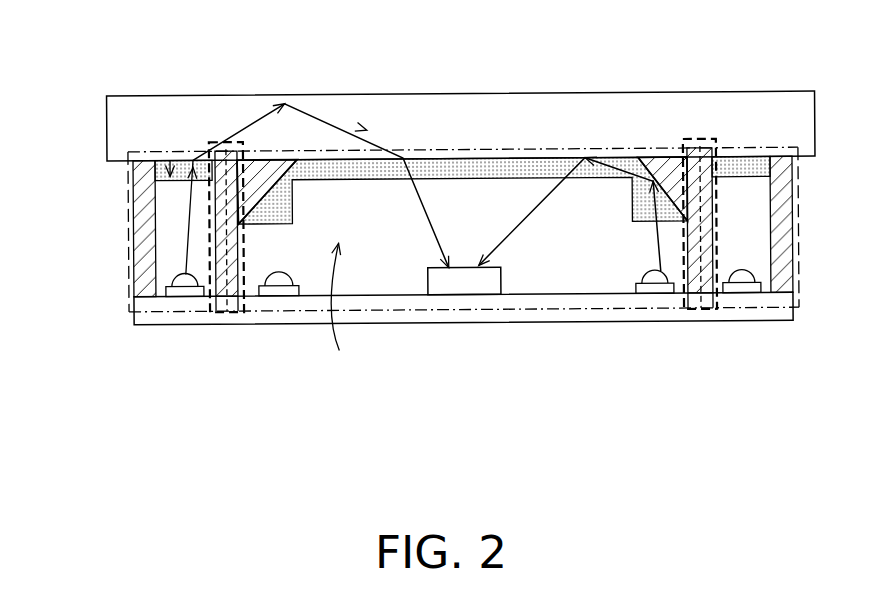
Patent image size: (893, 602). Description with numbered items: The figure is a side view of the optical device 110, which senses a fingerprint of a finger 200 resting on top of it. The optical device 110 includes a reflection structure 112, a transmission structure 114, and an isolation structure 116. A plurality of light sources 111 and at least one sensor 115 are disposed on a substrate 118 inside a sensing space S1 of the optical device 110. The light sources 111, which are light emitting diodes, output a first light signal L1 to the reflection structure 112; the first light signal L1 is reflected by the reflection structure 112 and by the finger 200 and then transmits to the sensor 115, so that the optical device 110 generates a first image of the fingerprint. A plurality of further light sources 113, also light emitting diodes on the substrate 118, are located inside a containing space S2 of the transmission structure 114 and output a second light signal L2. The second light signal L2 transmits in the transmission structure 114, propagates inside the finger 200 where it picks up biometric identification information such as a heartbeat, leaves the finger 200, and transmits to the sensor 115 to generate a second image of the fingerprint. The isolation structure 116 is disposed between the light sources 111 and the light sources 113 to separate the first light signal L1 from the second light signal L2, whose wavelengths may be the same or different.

The finger 200 is at (770, 103).
The optical device 110 is at (808, 452).
The light sources 111 is at (645, 280).
The reflection structure 112 is at (618, 149).
The light sources 113 is at (176, 273).
The transmission structure 114 is at (127, 238).
The sensor 115 is at (468, 290).
The isolation structure 116 is at (222, 315).
The substrate 118 is at (787, 316).
The sensing space S1 is at (338, 312).
The containing space S2 is at (173, 160).
The first light signal L1 is at (645, 224).
The second light signal L2 is at (195, 190).